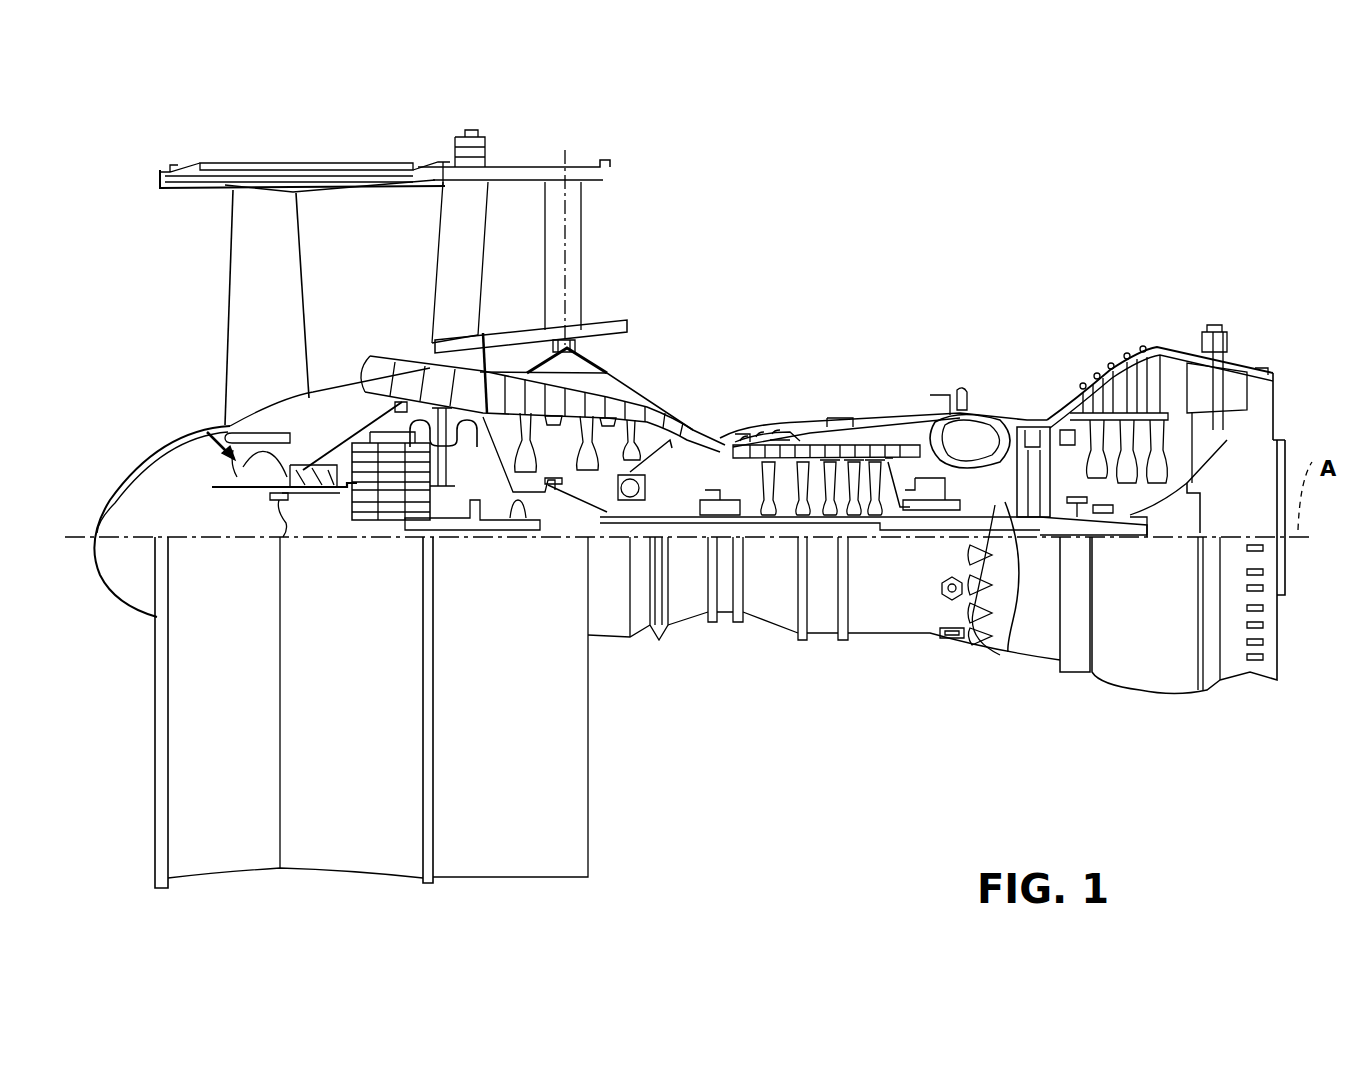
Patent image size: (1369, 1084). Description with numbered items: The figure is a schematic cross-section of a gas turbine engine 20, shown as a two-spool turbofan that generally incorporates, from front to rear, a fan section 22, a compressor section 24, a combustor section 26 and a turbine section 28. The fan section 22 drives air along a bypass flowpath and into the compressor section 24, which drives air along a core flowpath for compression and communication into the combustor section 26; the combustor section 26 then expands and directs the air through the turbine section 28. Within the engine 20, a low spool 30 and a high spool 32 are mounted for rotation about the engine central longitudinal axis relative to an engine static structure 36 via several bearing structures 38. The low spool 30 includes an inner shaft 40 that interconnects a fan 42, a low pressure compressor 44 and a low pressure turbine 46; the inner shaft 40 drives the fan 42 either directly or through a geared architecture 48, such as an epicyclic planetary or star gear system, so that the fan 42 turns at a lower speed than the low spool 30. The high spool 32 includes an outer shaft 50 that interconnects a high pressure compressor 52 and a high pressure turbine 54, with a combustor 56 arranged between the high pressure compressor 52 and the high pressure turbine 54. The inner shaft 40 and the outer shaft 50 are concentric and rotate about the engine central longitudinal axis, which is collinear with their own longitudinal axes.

The gas turbine engine 20 is at (1038, 240).
The fan section 22 is at (430, 143).
The compressor section 24 is at (865, 288).
The combustor section 26 is at (978, 288).
The turbine section 28 is at (1217, 288).
The low spool 30 is at (680, 487).
The high spool 32 is at (898, 478).
The engine static structure 36 is at (822, 638).
The bearing structures 38 is at (458, 606).
The inner shaft 40 is at (1000, 537).
The fan 42 is at (279, 333).
The low pressure compressor 44 is at (609, 392).
The low pressure turbine 46 is at (1133, 386).
The geared architecture 48 is at (388, 488).
The outer shaft 50 is at (1008, 652).
The high pressure compressor 52 is at (752, 440).
The high pressure turbine 54 is at (1037, 430).
The combustor 56 is at (970, 448).